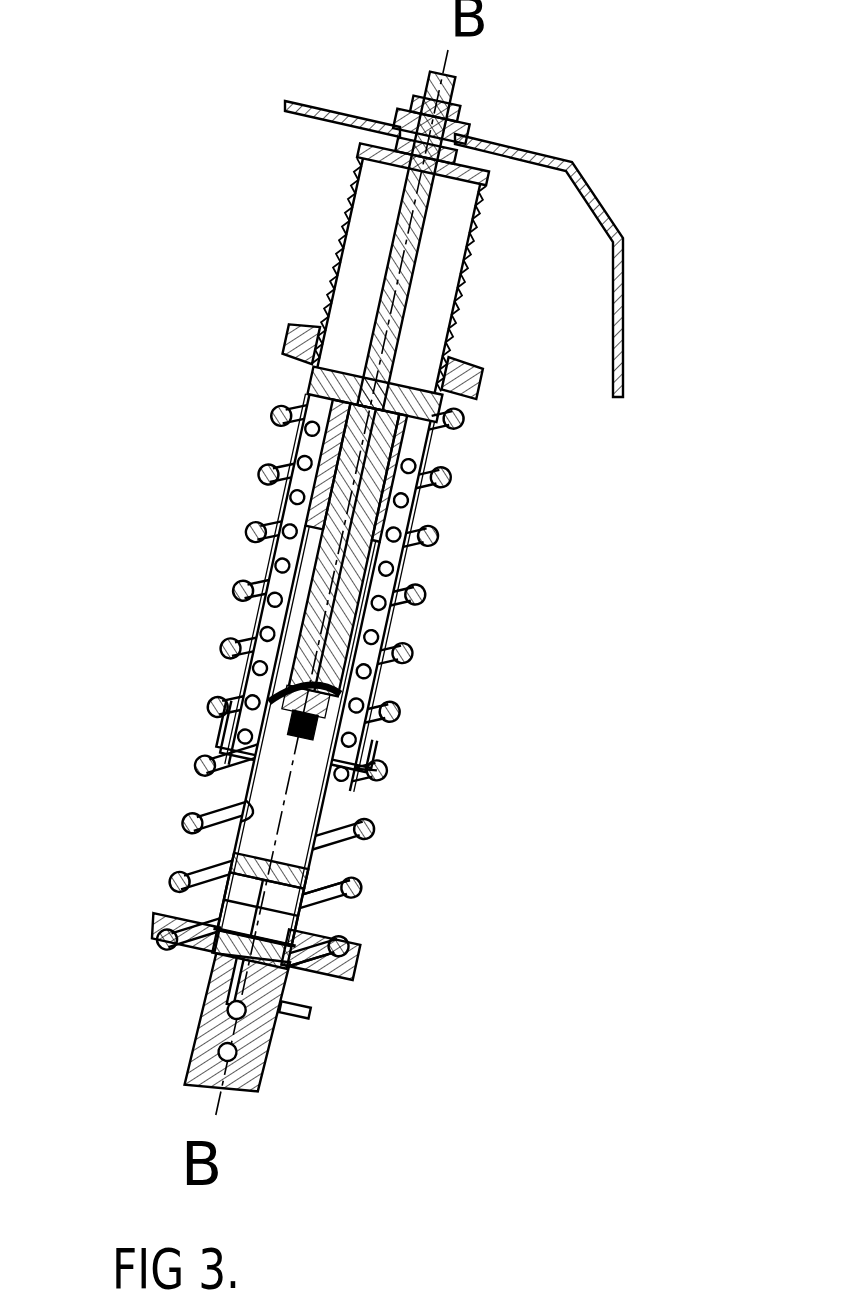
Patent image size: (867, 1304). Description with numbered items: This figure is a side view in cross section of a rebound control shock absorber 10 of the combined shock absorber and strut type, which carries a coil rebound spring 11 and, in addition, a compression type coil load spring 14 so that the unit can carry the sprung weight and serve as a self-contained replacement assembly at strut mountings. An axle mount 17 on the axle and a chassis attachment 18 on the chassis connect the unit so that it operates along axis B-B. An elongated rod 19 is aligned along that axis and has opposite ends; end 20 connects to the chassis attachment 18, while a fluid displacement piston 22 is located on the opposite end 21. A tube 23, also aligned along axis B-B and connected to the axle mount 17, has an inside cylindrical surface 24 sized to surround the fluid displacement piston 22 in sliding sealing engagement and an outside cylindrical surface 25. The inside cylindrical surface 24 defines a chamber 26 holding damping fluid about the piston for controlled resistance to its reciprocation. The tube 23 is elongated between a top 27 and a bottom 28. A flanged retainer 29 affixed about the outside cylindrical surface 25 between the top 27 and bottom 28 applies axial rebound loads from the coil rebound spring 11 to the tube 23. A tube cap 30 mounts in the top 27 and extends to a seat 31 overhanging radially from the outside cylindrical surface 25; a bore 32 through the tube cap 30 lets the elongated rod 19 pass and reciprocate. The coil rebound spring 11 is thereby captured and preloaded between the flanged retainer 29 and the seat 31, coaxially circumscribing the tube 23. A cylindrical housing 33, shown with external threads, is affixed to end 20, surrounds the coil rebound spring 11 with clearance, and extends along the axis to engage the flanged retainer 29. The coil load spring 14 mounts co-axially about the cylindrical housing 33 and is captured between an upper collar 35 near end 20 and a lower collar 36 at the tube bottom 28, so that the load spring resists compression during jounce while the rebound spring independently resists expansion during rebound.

The rebound control shock absorber 10 is at (565, 941).
The coil rebound spring 11 is at (393, 573).
The coil load spring 14 is at (257, 531).
The axle mount 17 is at (253, 1075).
The chassis attachment 18 is at (400, 127).
The elongated rod 19 is at (405, 323).
The end 20 is at (445, 85).
The end 21 is at (247, 758).
The fluid displacement piston 22 is at (318, 680).
The tube 23 is at (300, 842).
The inside cylindrical surface 24 is at (257, 826).
The outside cylindrical surface 25 is at (260, 615).
The chamber 26 is at (265, 840).
The top 27 is at (413, 512).
The bottom 28 is at (300, 898).
The flanged retainer 29 is at (367, 760).
The tube cap 30 is at (287, 500).
The seat 31 is at (417, 437).
The bore 32 is at (437, 387).
The cylindrical housing 33 is at (320, 268).
The upper collar 35 is at (283, 337).
The lower collar 36 is at (163, 923).